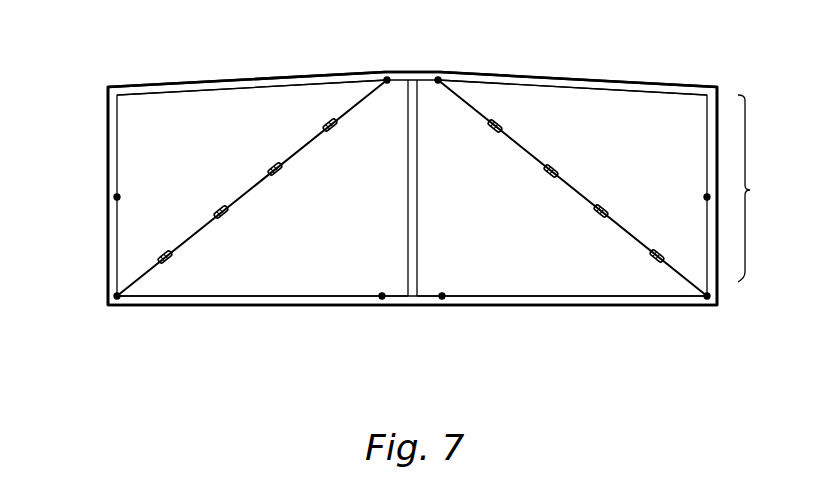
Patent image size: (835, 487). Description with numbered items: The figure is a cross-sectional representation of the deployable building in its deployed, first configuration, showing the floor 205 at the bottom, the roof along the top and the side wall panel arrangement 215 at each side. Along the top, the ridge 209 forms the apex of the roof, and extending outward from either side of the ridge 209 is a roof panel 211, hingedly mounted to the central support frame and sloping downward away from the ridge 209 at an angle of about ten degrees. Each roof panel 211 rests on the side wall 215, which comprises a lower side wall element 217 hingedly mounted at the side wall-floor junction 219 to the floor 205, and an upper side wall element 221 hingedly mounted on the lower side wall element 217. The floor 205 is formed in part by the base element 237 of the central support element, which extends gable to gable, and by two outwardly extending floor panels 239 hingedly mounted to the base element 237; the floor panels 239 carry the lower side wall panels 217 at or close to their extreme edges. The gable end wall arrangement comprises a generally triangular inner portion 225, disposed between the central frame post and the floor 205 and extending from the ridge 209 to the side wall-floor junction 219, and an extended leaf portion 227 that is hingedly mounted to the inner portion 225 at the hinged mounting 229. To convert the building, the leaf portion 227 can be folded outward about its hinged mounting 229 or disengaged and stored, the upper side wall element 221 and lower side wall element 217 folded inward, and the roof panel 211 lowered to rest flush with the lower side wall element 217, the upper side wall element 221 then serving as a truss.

The floor 205 is at (212, 306).
The ridge 209 is at (413, 71).
The roof panel 211 is at (208, 78).
The side wall panel arrangement 215 is at (771, 188).
The lower side wall element 217 is at (110, 255).
The side wall-floor junction 219 is at (117, 305).
The upper side wall element 221 is at (108, 125).
The inner portion 225 is at (330, 287).
The extended leaf portion 227 is at (285, 100).
The hinged mounting 229 is at (238, 198).
The base element 237 is at (396, 300).
The floor panel 239 is at (281, 306).